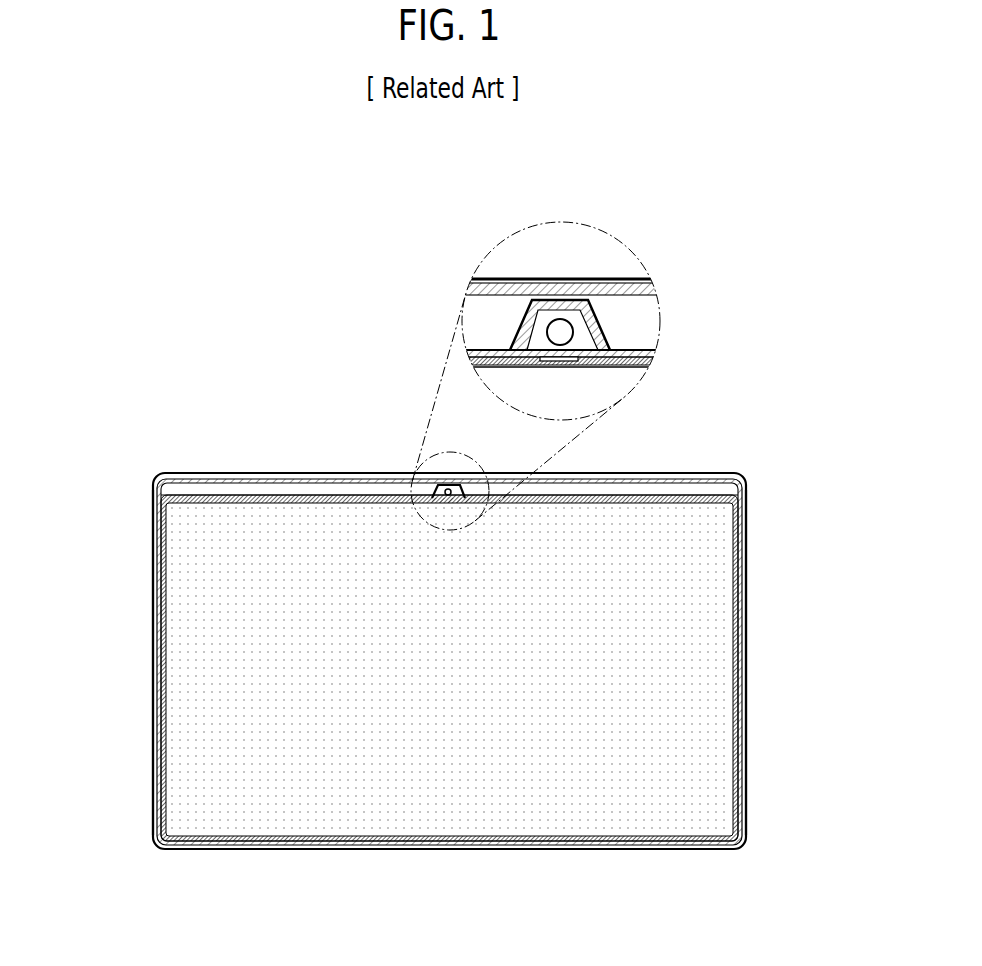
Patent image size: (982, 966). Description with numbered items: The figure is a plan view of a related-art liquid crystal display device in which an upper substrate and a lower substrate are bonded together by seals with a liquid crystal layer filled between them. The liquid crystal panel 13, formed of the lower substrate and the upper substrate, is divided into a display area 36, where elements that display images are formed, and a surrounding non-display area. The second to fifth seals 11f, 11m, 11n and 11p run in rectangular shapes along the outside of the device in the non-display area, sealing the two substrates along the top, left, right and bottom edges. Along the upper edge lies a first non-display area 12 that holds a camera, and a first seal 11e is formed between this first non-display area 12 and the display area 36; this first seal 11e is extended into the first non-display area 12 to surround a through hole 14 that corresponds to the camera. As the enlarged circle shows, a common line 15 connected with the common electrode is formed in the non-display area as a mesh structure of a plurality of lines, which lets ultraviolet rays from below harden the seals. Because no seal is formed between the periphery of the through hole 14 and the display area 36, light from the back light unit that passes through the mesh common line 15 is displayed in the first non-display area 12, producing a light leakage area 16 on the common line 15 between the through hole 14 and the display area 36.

The first seal 11e is at (190, 498).
The second seal 11f is at (258, 479).
The third seal 11m is at (157, 626).
The fourth seal 11n is at (740, 593).
The fifth seal 11p is at (432, 846).
The first non-display area 12 is at (320, 490).
The liquid crystal panel 13 is at (376, 473).
The through hole 14 is at (432, 492).
The common line 15 is at (500, 356).
The light leakage area 16 is at (560, 365).
The display area 36 is at (695, 752).